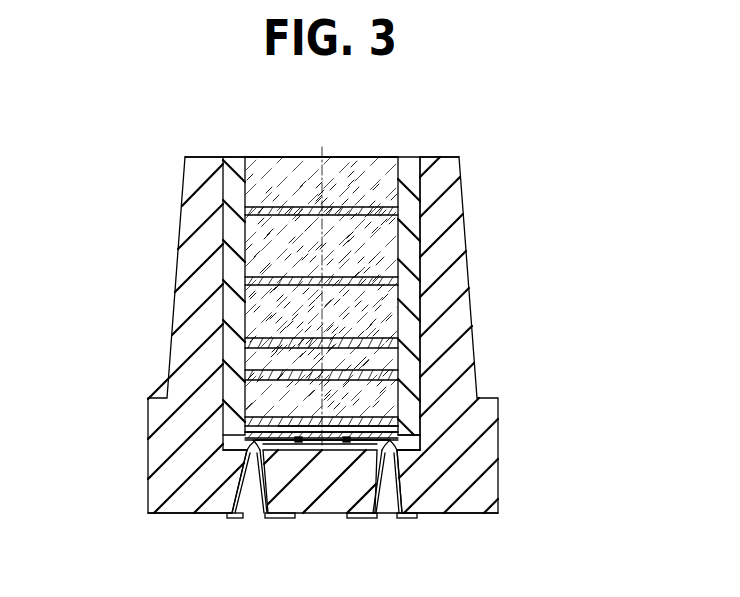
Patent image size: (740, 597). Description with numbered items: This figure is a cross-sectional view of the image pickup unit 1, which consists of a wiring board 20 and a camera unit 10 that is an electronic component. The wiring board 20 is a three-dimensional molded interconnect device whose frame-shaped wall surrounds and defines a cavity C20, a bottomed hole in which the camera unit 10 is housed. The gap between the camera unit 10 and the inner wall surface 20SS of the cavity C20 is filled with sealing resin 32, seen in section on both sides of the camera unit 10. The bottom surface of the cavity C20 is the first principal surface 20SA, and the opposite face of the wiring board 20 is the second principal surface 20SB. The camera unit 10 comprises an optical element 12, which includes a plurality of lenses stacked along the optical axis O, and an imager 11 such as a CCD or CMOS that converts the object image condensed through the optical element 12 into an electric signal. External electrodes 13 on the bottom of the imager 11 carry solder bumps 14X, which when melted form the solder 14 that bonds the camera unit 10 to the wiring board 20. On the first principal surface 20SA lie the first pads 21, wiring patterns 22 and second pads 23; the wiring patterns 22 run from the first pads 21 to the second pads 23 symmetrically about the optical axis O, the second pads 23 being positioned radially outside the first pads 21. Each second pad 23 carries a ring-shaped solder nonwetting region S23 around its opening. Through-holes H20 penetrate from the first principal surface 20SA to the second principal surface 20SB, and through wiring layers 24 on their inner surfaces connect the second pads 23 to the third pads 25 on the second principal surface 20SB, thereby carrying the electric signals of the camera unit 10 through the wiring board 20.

The image pickup unit 1 is at (85, 152).
The camera unit 10 is at (85, 266).
The imager 11 is at (252, 428).
The optical element 12 is at (246, 226).
The external electrodes 13 is at (250, 436).
The solder 14 is at (262, 443).
The solder bumps 14X is at (235, 465).
The wiring board 20 is at (465, 236).
The first principal surface 20SA is at (365, 447).
The second principal surface 20SB is at (202, 519).
The inner wall surface 20SS is at (414, 229).
The first pads 21 is at (344, 444).
The wiring patterns 22 is at (360, 447).
The second pads 23 is at (400, 447).
The through wiring layers 24 is at (254, 462).
The third pads 25 is at (280, 517).
The sealing resin 32 is at (234, 156).
The cavity C20 is at (348, 140).
The through-holes H20 is at (390, 522).
The optical axis O is at (322, 284).
The solder nonwetting region S23 is at (409, 440).